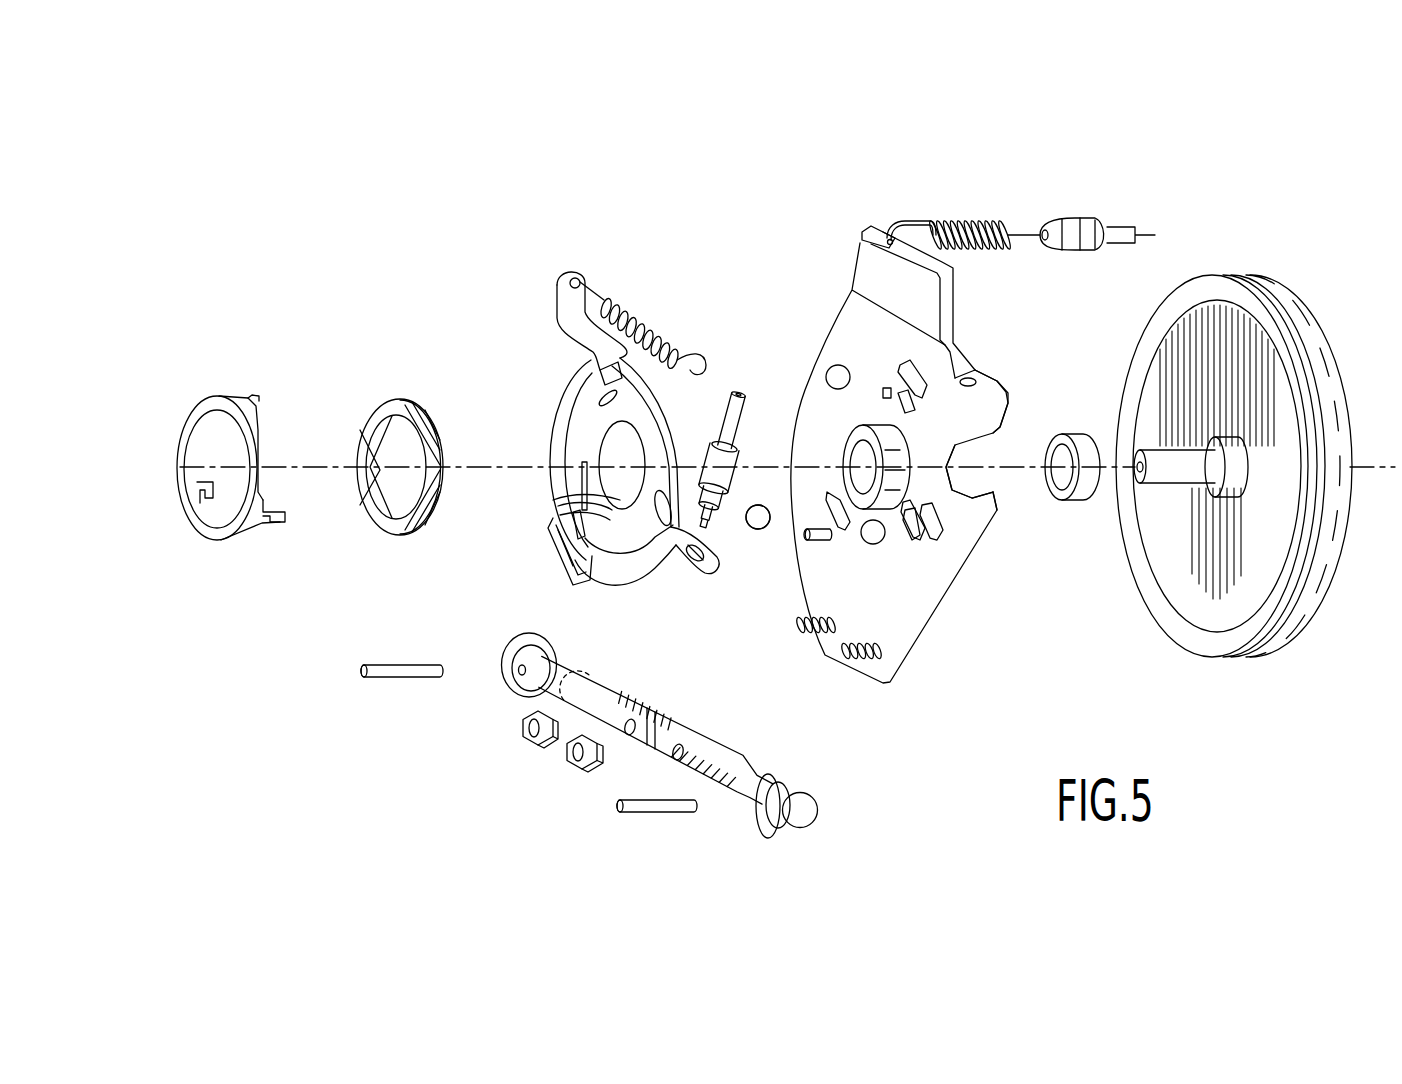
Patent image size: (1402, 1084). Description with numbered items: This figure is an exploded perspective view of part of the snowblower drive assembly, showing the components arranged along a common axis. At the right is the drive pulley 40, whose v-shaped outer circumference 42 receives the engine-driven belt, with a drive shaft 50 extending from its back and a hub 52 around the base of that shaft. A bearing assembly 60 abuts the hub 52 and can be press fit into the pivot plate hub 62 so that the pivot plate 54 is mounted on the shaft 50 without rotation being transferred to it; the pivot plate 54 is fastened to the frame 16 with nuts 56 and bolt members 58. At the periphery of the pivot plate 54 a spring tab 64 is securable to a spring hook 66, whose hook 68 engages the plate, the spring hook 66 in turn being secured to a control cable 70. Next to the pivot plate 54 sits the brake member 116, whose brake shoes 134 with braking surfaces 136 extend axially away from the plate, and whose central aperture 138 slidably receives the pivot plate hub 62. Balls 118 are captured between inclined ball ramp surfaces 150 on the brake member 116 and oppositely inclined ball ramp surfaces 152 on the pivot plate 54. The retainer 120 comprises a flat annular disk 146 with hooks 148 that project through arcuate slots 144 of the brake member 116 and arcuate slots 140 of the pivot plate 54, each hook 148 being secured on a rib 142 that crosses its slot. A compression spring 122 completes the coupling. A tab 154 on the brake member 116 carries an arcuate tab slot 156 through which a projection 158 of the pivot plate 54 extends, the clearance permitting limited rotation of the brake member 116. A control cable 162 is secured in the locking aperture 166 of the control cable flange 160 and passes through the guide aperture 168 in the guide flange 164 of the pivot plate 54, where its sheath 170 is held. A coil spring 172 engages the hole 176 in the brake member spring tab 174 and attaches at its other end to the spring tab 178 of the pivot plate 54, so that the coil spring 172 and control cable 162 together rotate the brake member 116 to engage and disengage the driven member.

The frame 16 is at (727, 797).
The drive pulley 40 is at (1250, 437).
The v-shaped outer circumference 42 is at (1305, 333).
The drive shaft 50 is at (1170, 484).
The hub 52 is at (1238, 483).
The pivot plate 54 is at (943, 423).
The nuts 56 is at (523, 742).
The bolt members 58 is at (840, 655).
The bearing assembly 60 is at (1077, 500).
The pivot plate hub 62 is at (858, 425).
The spring tab 64 is at (872, 230).
The spring hook 66 is at (967, 220).
The hook 68 is at (905, 218).
The control cable 70 is at (1032, 225).
The brake member 116 is at (598, 418).
The balls 118 is at (832, 368).
The retainer 120 is at (241, 452).
The compression spring 122 is at (408, 400).
The brake shoe 134 is at (550, 455).
The braking surface 136 is at (651, 415).
The aperture 138 is at (627, 456).
The arcuate slots 140 is at (912, 392).
The rib 142 is at (887, 388).
The arcuate slots 144 is at (607, 396).
The flat annular disk 146 is at (187, 434).
The hooks 148 is at (258, 400).
The inclined ball ramp surfaces 150 is at (606, 373).
The inclined ball ramp surfaces 152 is at (903, 360).
The tab 154 is at (560, 553).
The arcuate tab slot 156 is at (560, 577).
The projection 158 is at (820, 541).
The control cable flange 160 is at (712, 598).
The control cable 162 is at (748, 493).
The guide flange 164 is at (987, 510).
The locking aperture 166 is at (713, 552).
The guide aperture 168 is at (973, 486).
The sheath 170 is at (713, 467).
The coil spring 172 is at (636, 270).
The spring tab 174 is at (555, 298).
The hole 176 is at (568, 277).
The spring tab 178 is at (983, 385).